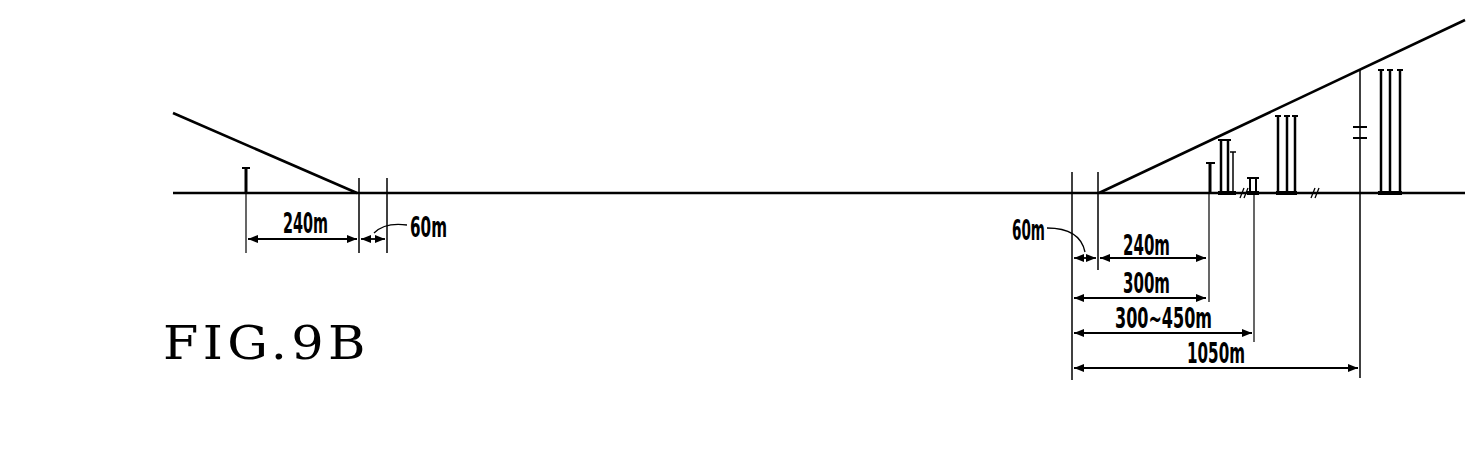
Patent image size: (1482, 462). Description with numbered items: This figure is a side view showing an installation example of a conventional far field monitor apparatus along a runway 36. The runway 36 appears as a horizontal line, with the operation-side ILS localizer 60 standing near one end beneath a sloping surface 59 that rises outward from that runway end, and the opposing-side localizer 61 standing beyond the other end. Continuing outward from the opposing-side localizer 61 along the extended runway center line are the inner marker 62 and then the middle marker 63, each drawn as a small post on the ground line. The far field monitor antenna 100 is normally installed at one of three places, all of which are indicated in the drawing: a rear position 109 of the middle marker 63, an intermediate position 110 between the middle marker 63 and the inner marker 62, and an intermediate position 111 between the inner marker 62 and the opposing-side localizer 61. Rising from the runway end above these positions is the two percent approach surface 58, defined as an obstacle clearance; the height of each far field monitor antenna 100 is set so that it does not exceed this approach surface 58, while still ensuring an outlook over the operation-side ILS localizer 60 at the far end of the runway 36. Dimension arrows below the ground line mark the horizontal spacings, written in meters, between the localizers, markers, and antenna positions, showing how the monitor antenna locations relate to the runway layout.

The runway 36 is at (713, 192).
The 2% approach surface 58 is at (1327, 84).
The downhill slope 59 is at (252, 147).
The operation-side ILS localizer 60 is at (244, 180).
The opposing-side localizer 61 is at (1208, 163).
The inner marker 62 is at (1255, 195).
The middle marker 63 is at (1362, 195).
The far field monitor antenna 100 is at (1233, 152).
The rear position of the middle marker 109 is at (1395, 195).
The intermediate position between the middle marker and the inner marker 110 is at (1288, 195).
The intermediate position between the inner marker and the opposing-side localizer 111 is at (1232, 196).